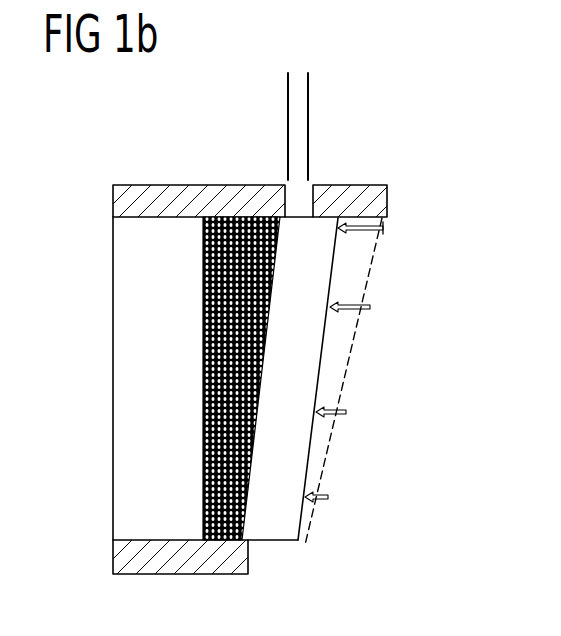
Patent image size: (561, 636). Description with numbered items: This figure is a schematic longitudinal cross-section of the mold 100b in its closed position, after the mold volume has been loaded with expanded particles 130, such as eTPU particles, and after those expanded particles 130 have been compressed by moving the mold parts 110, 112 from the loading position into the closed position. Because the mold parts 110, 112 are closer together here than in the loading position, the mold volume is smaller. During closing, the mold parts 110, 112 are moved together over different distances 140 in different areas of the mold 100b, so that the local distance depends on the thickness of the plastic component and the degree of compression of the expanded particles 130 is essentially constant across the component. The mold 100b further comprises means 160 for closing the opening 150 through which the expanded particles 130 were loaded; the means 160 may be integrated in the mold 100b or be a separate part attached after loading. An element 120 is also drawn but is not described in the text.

The mold 100b is at (172, 151).
The mold part 110 is at (127, 493).
The mold part 112 is at (283, 525).
The electrode 120 is at (309, 93).
The expanded particles 130 is at (203, 349).
The distances 140 is at (382, 230).
The opening 150 is at (297, 200).
The means for closing the opening 160 is at (377, 198).